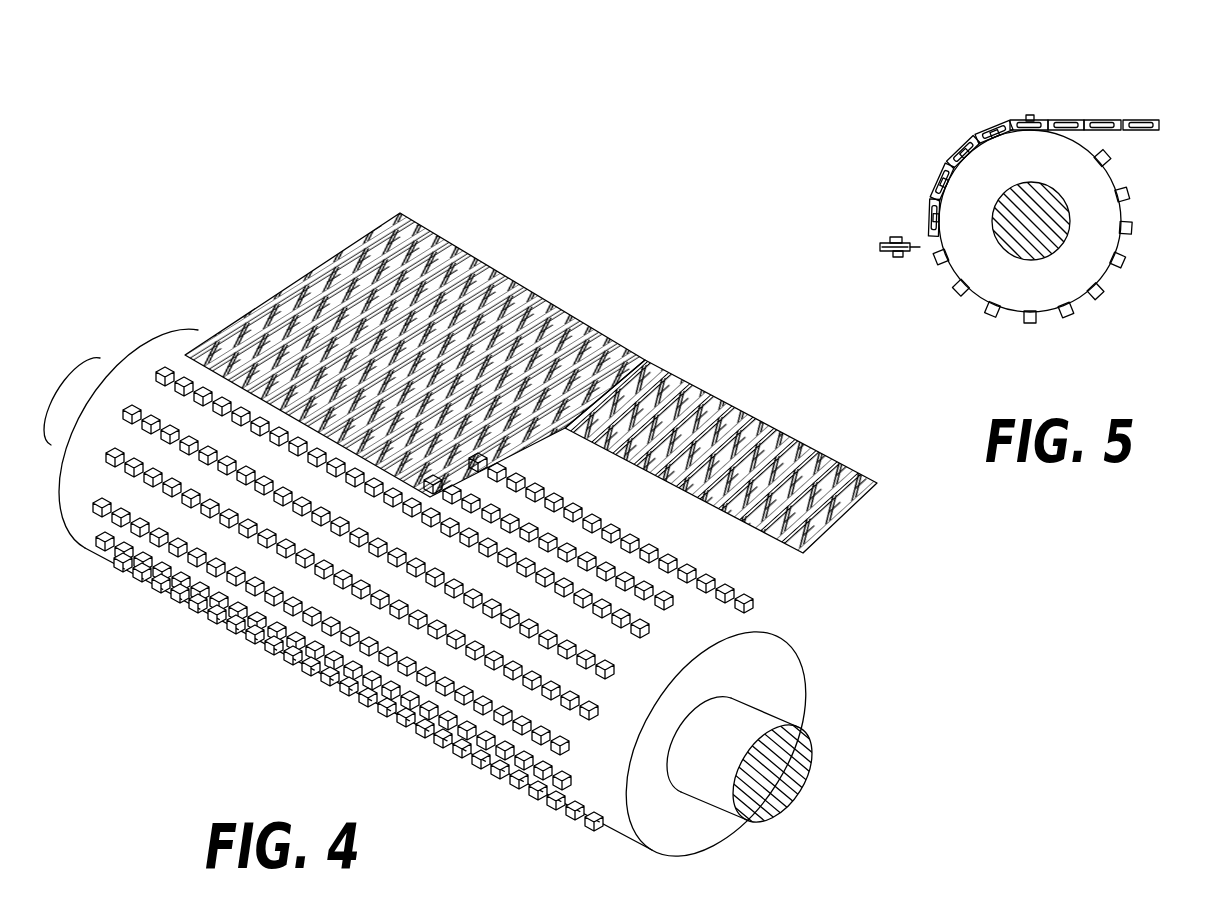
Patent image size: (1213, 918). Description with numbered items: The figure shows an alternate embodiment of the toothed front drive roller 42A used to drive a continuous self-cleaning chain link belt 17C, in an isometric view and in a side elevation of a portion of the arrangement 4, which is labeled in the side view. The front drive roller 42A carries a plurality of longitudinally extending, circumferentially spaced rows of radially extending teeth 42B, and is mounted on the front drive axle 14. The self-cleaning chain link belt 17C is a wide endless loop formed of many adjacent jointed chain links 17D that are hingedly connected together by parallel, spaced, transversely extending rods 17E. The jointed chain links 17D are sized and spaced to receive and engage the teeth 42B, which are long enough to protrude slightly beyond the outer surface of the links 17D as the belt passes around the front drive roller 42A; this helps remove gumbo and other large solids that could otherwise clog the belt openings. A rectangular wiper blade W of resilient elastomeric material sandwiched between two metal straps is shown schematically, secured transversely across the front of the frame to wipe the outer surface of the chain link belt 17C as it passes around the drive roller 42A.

In FIG. 5, the drum assembly 4 is at (1122, 225).
In FIG. 4, the front drive axle 14 is at (800, 772).
In FIG. 4, the self-cleaning chain link belt 17C is at (592, 274).
In FIG. 5, the self-cleaning chain link belt 17C is at (1104, 123).
In FIG. 4, the jointed chain links 17D is at (428, 238).
In FIG. 5, the jointed chain links 17D is at (1008, 120).
In FIG. 4, the transversely extending rods 17E is at (310, 260).
In FIG. 5, the transversely extending rods 17E is at (1066, 120).
In FIG. 4, the front drive roller 42A is at (783, 678).
In FIG. 5, the front drive roller 42A is at (985, 283).
In FIG. 4, the teeth 42B is at (690, 562).
In FIG. 5, the teeth 42B is at (958, 152).
In FIG. 5, the wiper blade W is at (892, 228).